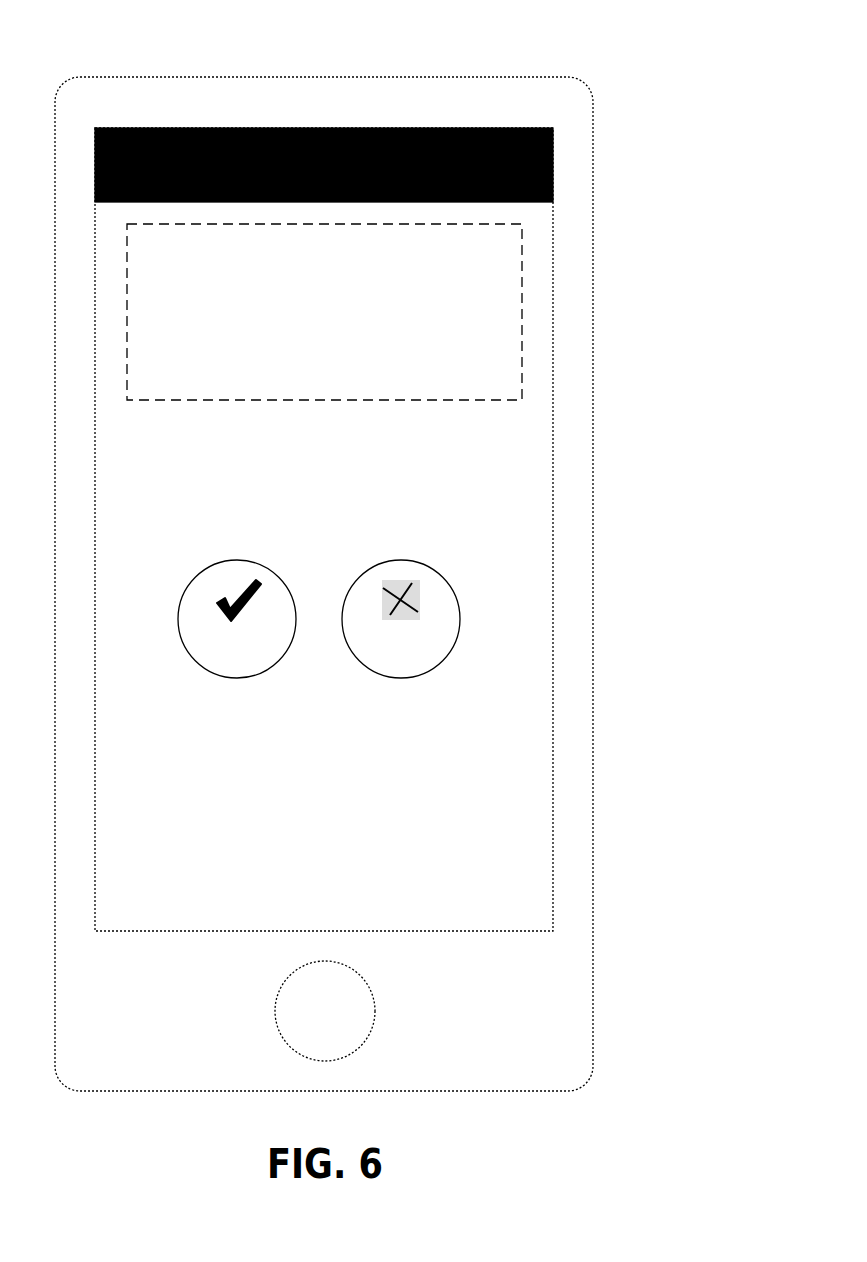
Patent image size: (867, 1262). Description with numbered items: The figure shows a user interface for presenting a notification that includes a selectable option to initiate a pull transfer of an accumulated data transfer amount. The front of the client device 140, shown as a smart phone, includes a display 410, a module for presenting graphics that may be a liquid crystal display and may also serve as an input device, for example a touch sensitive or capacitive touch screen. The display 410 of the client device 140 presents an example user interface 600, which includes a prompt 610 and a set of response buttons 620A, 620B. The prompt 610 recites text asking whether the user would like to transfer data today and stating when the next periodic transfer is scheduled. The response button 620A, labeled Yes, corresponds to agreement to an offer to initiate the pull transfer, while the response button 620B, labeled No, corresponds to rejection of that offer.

The client device 140 is at (485, 75).
The user interface 600 is at (347, 918).
The display 410 is at (515, 488).
The prompt 610 is at (517, 338).
The response button 620A is at (270, 585).
The response button 620B is at (433, 585).